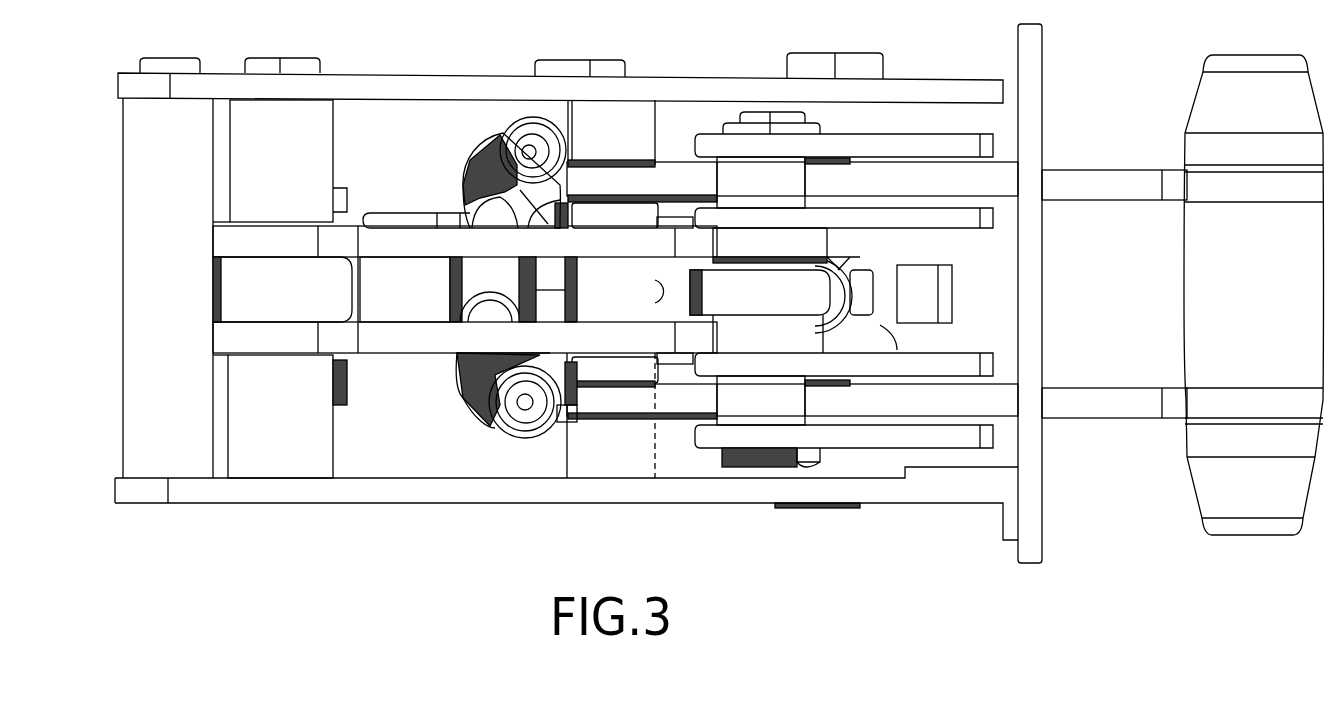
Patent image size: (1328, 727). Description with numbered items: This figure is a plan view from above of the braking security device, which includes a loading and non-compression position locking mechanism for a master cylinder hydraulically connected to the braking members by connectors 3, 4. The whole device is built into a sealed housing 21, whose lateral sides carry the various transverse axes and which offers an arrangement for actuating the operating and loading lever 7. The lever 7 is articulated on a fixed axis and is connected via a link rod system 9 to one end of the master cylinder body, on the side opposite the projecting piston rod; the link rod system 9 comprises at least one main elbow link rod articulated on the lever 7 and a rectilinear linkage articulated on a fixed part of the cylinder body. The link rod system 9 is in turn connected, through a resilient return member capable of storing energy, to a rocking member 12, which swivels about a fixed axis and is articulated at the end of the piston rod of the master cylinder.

The sealed housing 21 is at (400, 98).
The connector 3 is at (503, 133).
The connector 4 is at (512, 417).
The link rod system 9 is at (723, 147).
The lever 7 is at (1101, 175).
The rocking member 12 is at (408, 333).